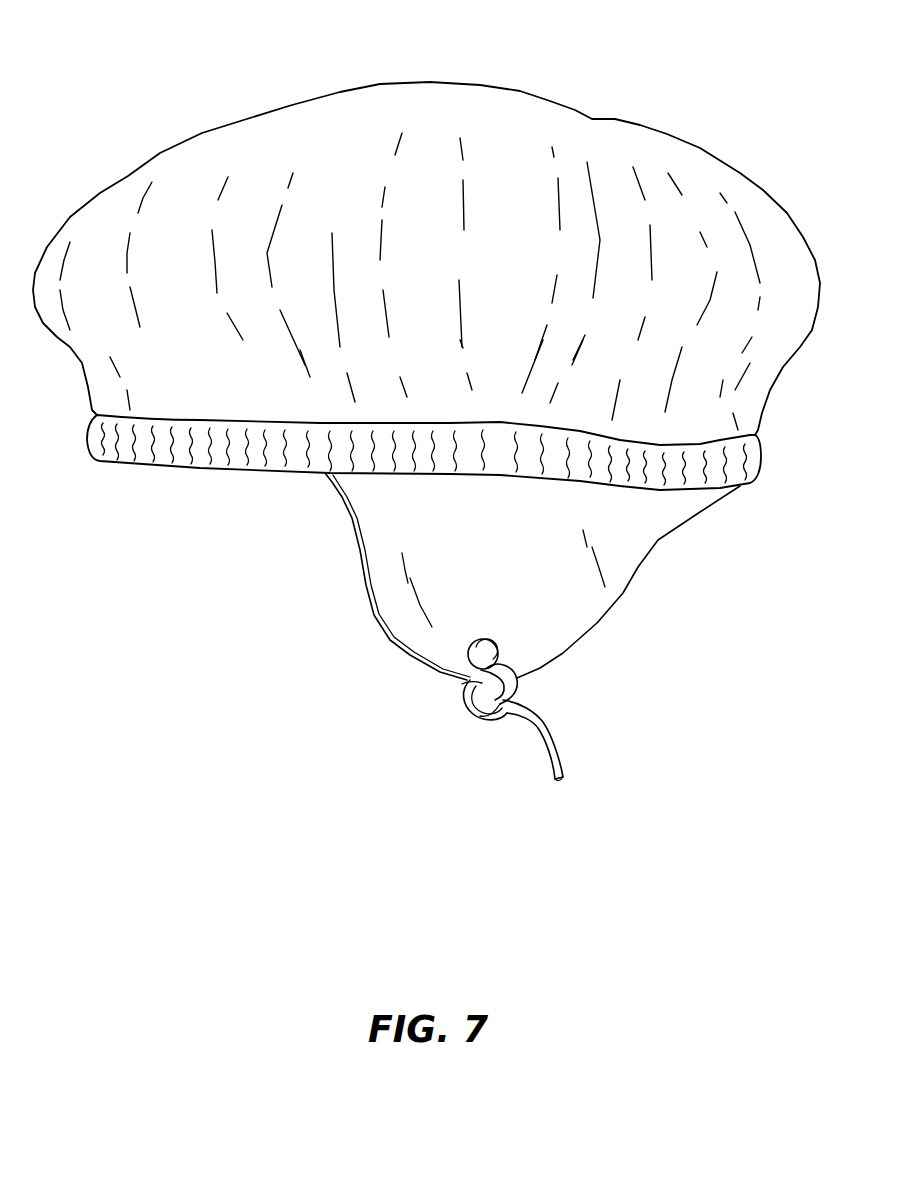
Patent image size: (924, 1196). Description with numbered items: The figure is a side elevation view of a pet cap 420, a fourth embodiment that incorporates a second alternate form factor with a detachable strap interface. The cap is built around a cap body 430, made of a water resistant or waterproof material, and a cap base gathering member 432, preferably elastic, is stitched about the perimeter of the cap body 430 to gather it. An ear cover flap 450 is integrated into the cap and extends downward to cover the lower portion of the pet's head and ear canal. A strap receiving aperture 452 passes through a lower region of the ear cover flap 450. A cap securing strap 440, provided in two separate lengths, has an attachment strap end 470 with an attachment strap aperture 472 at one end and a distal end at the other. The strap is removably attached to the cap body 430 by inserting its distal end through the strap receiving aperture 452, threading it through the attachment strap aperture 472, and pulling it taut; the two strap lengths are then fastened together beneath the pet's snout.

The pet cap 420 is at (141, 101).
The cap body 430 is at (716, 173).
The cap base gathering member 432 is at (198, 462).
The ear cover flap 450 is at (597, 625).
The strap receiving aperture 452 is at (498, 640).
The attachment strap aperture 472 is at (519, 689).
The attachment strap end 470 is at (470, 718).
The cap securing strap 440 is at (544, 752).